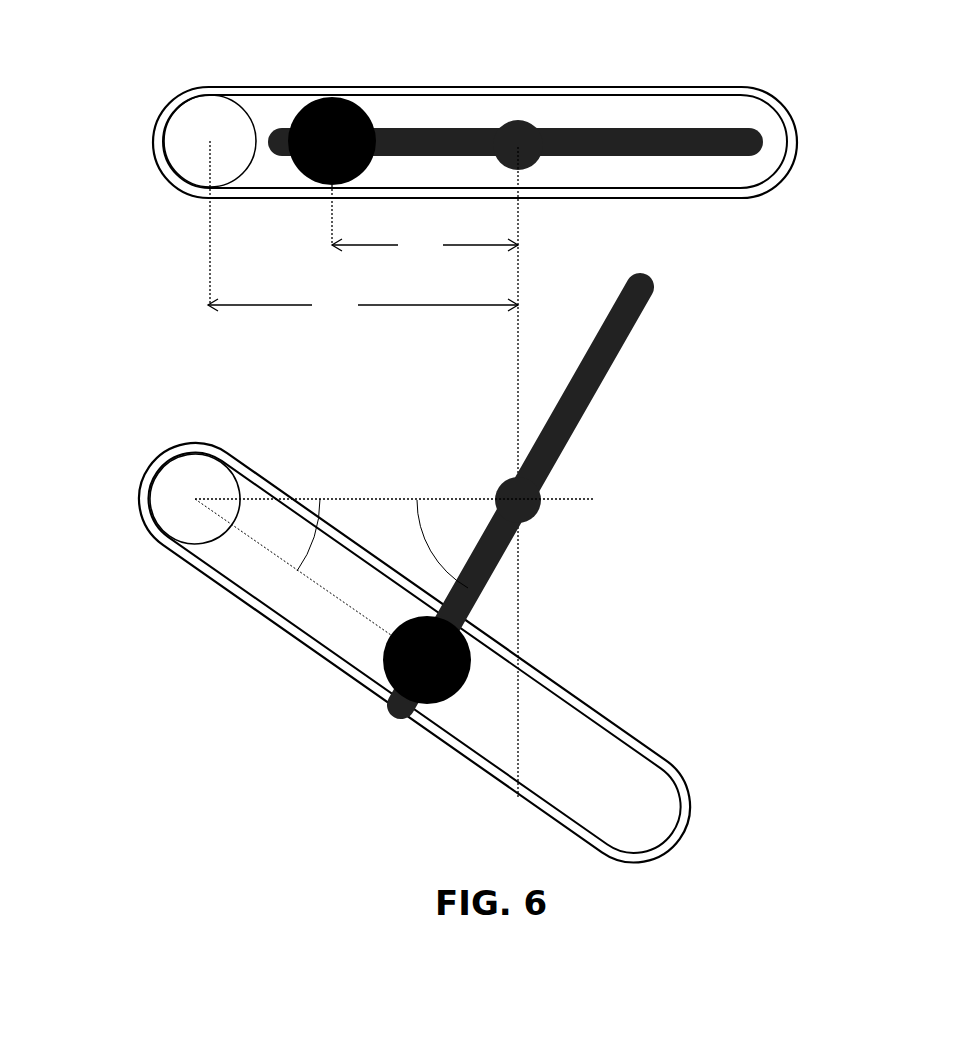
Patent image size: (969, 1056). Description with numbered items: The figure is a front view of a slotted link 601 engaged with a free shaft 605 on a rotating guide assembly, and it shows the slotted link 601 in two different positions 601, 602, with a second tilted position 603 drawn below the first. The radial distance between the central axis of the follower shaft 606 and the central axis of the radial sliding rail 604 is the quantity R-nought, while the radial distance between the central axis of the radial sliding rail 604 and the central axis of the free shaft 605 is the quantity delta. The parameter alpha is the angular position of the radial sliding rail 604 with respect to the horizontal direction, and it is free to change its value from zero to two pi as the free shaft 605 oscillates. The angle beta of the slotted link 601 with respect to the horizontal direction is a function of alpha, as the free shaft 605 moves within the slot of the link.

The slotted link 601 is at (166, 417).
The slotted link position 602 is at (785, 244).
The tube assembly in tilted position 603 is at (759, 458).
The radial sliding rail 604 is at (590, 127).
The free shaft 605 is at (367, 110).
The follower shaft 606 is at (205, 105).